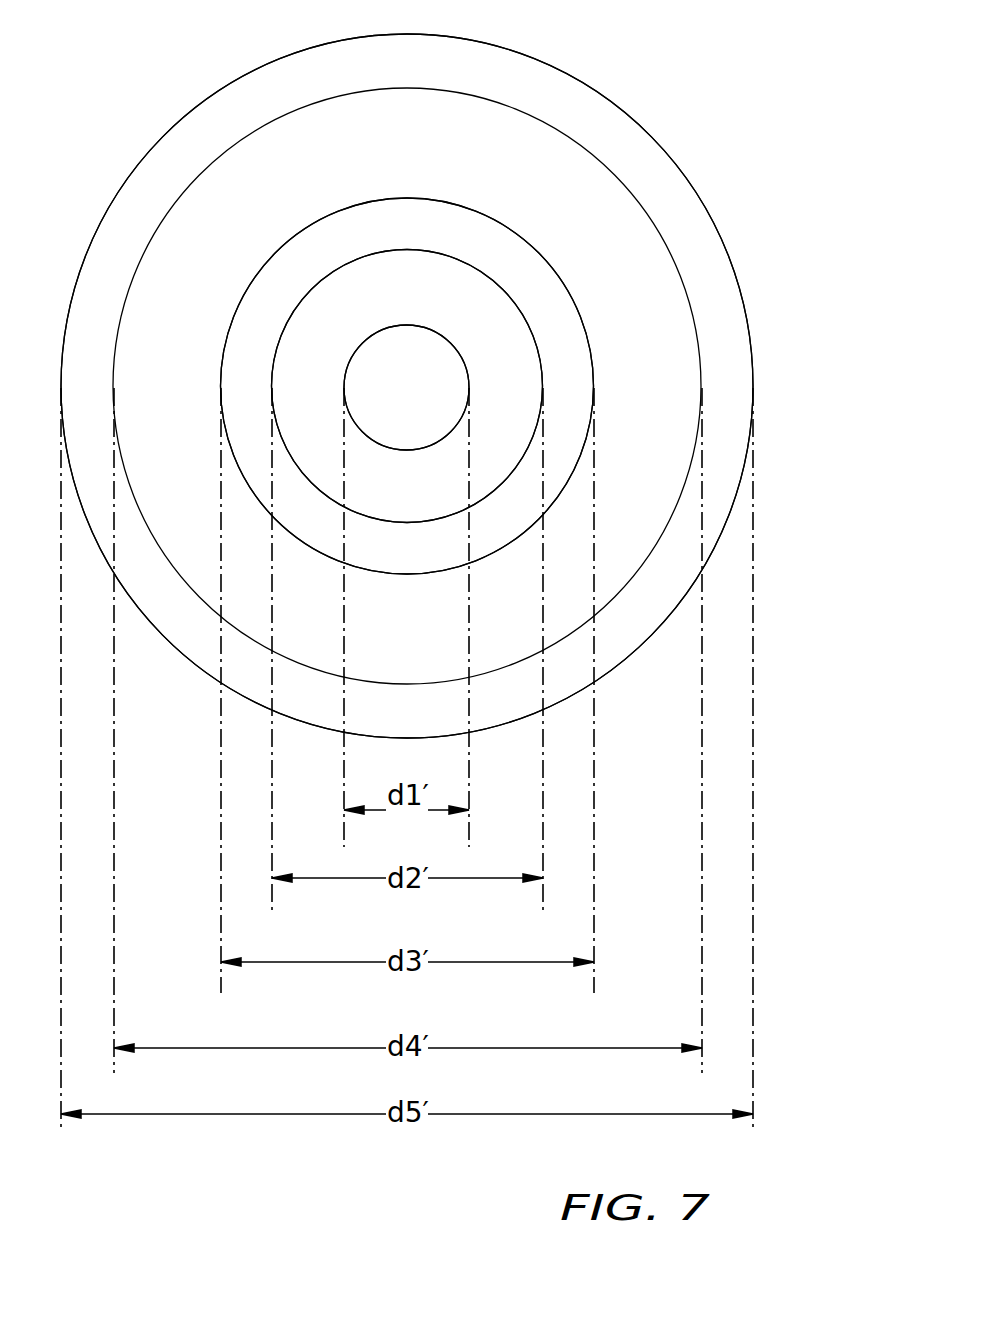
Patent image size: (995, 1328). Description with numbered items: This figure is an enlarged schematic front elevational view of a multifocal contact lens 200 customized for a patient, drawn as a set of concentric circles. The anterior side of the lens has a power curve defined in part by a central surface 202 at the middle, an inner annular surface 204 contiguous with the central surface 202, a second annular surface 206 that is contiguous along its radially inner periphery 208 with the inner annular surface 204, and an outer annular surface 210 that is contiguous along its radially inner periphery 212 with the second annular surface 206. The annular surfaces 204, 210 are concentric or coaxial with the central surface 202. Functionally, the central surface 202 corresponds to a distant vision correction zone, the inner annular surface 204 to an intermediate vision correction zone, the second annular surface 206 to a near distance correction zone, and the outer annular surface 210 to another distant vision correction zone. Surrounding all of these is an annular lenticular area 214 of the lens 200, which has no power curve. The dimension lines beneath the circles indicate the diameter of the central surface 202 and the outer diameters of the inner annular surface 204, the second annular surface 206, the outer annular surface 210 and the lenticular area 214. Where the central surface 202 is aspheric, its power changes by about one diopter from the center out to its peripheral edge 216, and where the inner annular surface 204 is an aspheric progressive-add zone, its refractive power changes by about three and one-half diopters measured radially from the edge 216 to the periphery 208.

The multifocal contact lens 200 is at (762, 163).
The central surface 202 is at (403, 372).
The inner annular surface 204 is at (302, 375).
The second annular surface 206 is at (314, 248).
The radially inner periphery 208 is at (537, 340).
The outer annular surface 210 is at (668, 378).
The radially inner periphery 212 is at (583, 362).
The annular lenticular area 214 is at (582, 93).
The peripheral edge 216 is at (460, 353).